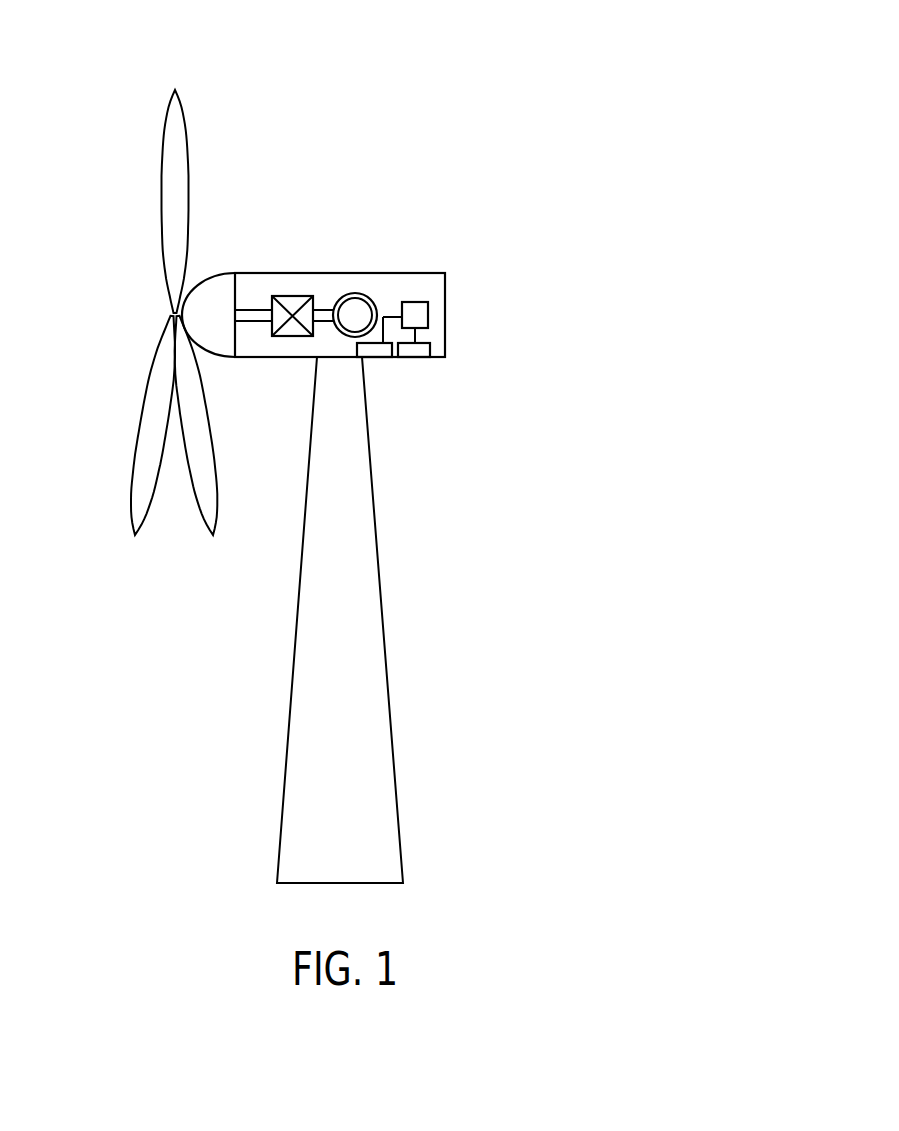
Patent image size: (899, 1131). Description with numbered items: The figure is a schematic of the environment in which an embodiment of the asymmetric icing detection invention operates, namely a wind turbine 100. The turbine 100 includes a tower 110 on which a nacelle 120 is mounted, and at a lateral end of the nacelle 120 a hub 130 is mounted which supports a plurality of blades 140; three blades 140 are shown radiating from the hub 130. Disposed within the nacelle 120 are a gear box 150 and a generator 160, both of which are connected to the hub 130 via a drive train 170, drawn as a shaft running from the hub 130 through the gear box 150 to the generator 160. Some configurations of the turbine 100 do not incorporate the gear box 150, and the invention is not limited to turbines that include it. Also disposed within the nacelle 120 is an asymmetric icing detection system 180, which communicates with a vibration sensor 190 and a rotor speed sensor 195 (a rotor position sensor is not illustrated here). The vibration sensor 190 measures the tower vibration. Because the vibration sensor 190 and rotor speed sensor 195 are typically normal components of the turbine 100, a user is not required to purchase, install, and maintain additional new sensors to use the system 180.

The turbine 100 is at (505, 137).
The tower 110 is at (398, 842).
The nacelle 120 is at (445, 313).
The hub 130 is at (220, 360).
The blades 140 is at (167, 122).
The gear box 150 is at (293, 296).
The generator 160 is at (353, 293).
The drive train 170 is at (253, 310).
The asymmetric icing detection system 180 is at (415, 302).
The vibration sensor 190 is at (433, 357).
The rotor speed sensor 195 is at (393, 357).